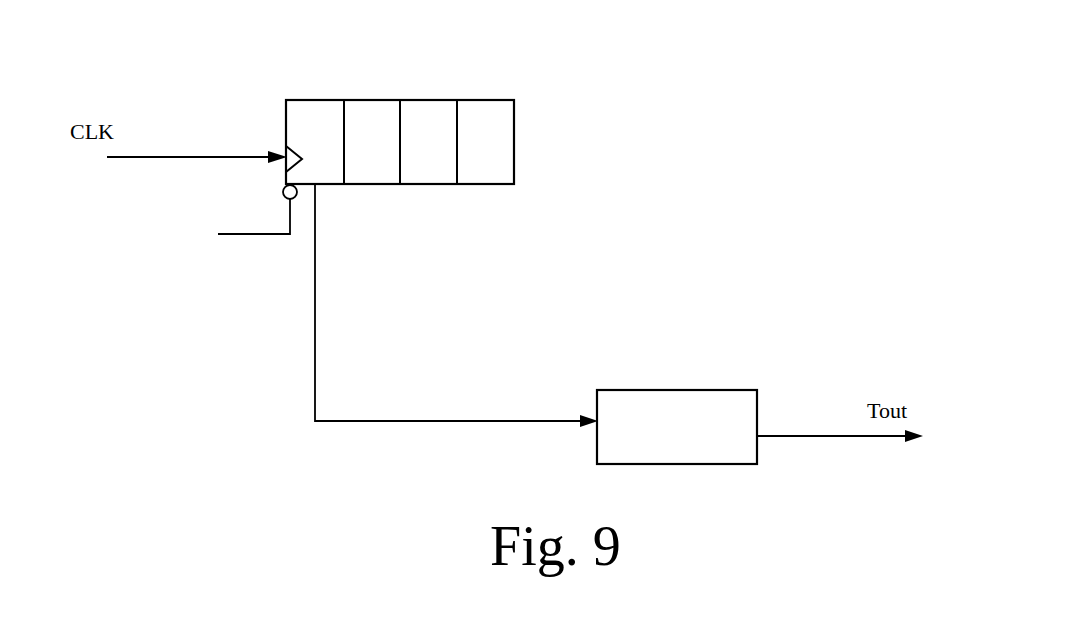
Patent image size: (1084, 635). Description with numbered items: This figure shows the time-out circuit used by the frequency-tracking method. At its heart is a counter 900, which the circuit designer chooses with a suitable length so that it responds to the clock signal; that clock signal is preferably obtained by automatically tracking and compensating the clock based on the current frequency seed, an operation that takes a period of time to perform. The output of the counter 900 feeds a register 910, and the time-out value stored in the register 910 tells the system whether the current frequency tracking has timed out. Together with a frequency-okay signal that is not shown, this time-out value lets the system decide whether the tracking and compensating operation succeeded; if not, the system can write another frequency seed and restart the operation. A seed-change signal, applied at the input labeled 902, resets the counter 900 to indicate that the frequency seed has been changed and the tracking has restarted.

The counter 900 is at (370, 100).
The seed change input 902 is at (260, 236).
The register 910 is at (667, 390).